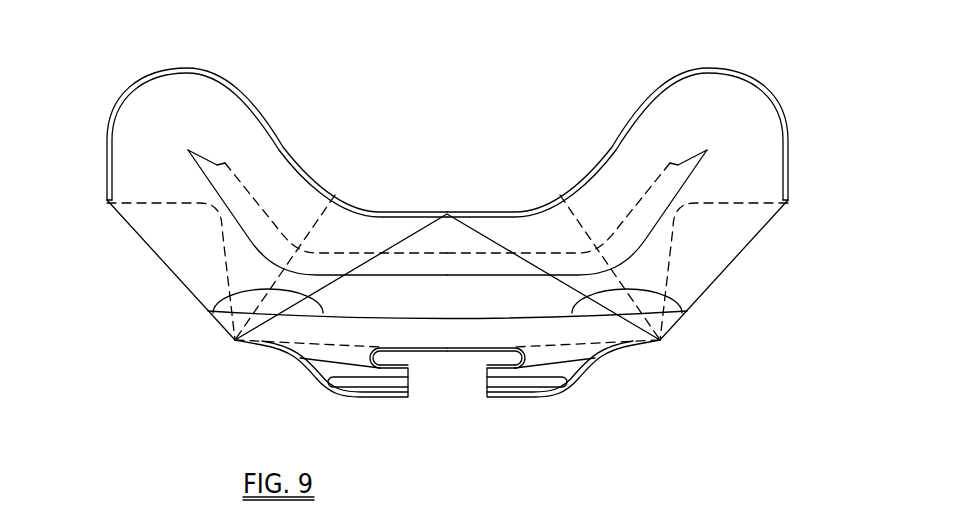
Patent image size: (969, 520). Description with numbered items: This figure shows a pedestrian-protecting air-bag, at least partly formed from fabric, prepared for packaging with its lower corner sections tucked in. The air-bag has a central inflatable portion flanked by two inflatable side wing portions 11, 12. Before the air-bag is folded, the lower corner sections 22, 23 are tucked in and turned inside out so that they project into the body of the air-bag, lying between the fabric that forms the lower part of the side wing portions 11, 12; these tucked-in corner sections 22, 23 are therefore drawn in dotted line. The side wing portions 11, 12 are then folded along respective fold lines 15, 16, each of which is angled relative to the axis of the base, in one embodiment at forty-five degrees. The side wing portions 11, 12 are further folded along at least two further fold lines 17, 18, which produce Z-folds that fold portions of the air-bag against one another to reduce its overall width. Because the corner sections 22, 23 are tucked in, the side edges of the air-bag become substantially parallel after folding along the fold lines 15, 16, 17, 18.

The side wing portion 11 is at (152, 117).
The side wing portion 12 is at (748, 118).
The fold line 15 is at (233, 340).
The fold line 16 is at (662, 342).
The further fold line 17 is at (313, 226).
The further fold line 18 is at (586, 228).
The lower corner section 22 is at (165, 205).
The lower corner section 23 is at (723, 203).